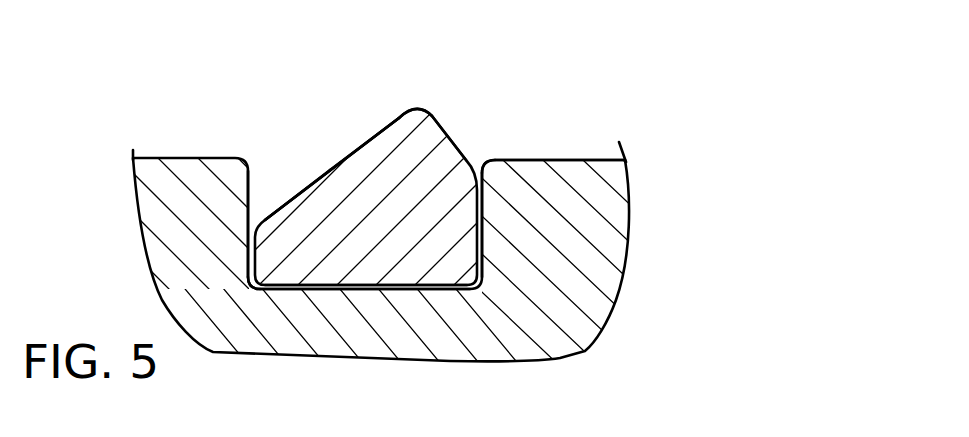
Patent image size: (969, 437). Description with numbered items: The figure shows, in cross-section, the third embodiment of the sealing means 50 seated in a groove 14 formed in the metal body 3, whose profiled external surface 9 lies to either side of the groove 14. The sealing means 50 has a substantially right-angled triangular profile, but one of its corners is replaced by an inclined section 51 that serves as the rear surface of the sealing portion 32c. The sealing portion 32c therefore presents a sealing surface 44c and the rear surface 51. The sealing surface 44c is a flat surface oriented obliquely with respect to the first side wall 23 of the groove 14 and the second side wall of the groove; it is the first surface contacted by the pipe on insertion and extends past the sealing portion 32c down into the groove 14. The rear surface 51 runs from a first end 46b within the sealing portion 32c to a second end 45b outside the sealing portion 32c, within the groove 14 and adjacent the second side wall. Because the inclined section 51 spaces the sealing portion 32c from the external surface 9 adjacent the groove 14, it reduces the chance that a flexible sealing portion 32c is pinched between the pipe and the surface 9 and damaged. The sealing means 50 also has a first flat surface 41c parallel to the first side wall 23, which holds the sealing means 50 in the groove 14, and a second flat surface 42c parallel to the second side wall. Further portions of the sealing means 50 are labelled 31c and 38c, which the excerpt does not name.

The metal body 3 is at (580, 250).
The profiled external surface 9 is at (540, 160).
The groove 14 is at (300, 286).
The first side wall of the groove 23 is at (248, 192).
The bottom surface of insert 31c is at (330, 291).
The sealing portion 32c is at (397, 115).
The inclined surface portion 38c is at (292, 181).
The first flat surface 41c is at (253, 257).
The second flat surface 42c is at (482, 218).
The sealing surface 44c is at (356, 148).
The second end of the rear surface 45b is at (416, 109).
The first end of the rear surface 46b is at (497, 160).
The sealing means 50 is at (400, 238).
The inclined section (rear surface) 51 is at (460, 156).